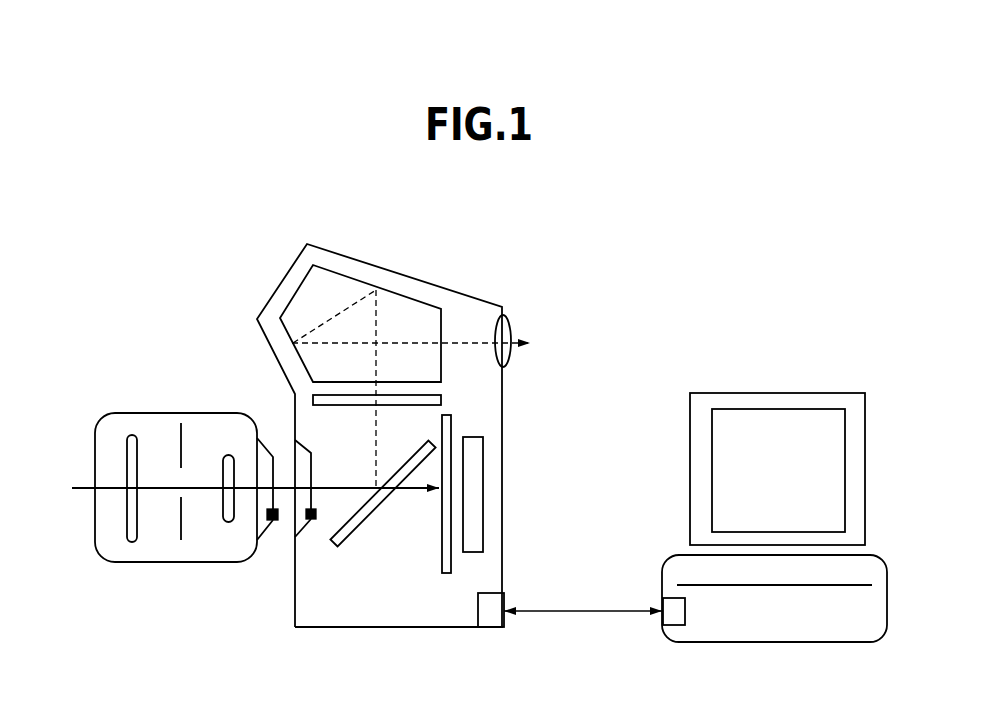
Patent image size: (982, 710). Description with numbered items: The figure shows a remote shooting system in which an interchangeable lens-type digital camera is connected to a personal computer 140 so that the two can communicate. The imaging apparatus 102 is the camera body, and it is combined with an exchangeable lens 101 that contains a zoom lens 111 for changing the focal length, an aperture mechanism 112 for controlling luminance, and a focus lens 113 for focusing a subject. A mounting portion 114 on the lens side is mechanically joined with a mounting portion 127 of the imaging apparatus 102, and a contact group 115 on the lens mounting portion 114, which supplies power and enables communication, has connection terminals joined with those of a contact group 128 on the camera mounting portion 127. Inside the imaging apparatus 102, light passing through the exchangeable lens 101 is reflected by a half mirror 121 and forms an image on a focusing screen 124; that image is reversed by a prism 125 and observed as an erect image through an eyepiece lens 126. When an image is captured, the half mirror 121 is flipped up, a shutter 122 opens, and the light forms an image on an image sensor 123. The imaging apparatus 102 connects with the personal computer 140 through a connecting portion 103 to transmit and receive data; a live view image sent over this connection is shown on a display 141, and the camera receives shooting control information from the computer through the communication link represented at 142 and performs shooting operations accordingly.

The exchangeable lens 101 is at (125, 413).
The imaging apparatus 102 is at (277, 288).
The connecting portion 103 is at (488, 628).
The zoom lens 111 is at (127, 524).
The aperture mechanism 112 is at (183, 524).
The focus lens 113 is at (228, 522).
The mounting portion 114 is at (267, 438).
The contact group 115 is at (276, 521).
The half mirror 121 is at (358, 533).
The shutter 122 is at (445, 578).
The image sensor 123 is at (483, 490).
The focusing screen 124 is at (441, 399).
The prism 125 is at (441, 368).
The eyepiece lens 126 is at (512, 322).
The mounting portion 127 is at (311, 453).
The contact group 128 is at (316, 521).
The personal computer 140 is at (783, 642).
The display 141 is at (792, 393).
The communication port 142 is at (660, 627).